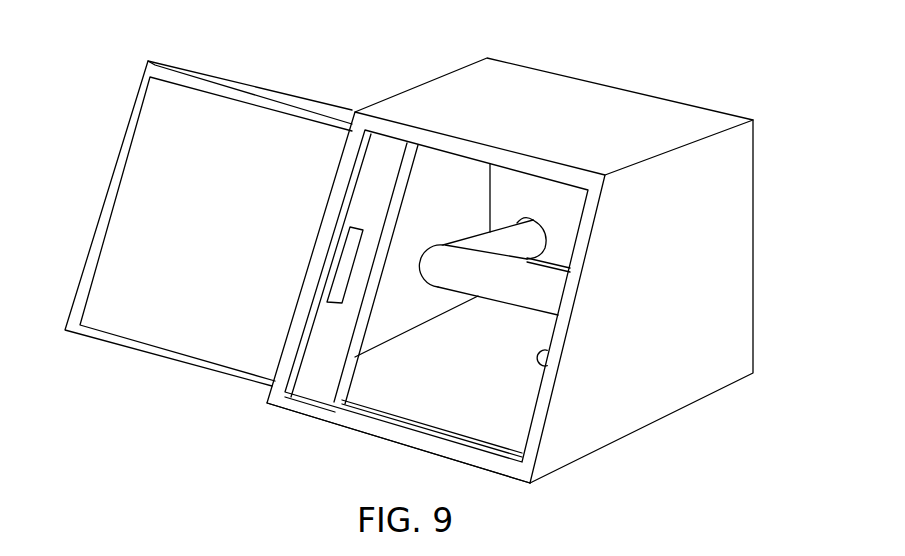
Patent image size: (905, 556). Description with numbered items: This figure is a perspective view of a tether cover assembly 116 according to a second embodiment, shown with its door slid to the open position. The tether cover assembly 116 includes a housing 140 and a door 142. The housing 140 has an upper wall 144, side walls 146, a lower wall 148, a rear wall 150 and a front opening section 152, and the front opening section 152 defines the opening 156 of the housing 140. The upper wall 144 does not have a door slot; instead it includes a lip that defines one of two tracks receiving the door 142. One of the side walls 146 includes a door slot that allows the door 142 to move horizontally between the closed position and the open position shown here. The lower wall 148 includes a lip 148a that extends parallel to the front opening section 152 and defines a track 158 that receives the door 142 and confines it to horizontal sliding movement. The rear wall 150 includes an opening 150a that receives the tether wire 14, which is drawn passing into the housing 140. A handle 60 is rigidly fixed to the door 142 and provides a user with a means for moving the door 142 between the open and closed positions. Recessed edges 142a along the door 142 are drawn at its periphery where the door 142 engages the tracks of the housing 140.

The tether cover assembly 116 is at (289, 40).
The housing 140 is at (427, 80).
The door 142 is at (155, 192).
The door rim 142a is at (137, 122).
The upper wall 144 is at (658, 120).
The side walls 146 is at (703, 300).
The lower wall 148 is at (385, 378).
The lip 148a is at (440, 427).
The rear wall 150 is at (517, 195).
The opening 150a is at (562, 228).
The front opening section 152 is at (543, 407).
The opening 156 is at (548, 364).
The track 158 is at (413, 417).
The tether wire 14 is at (508, 287).
The handle 60 is at (347, 260).